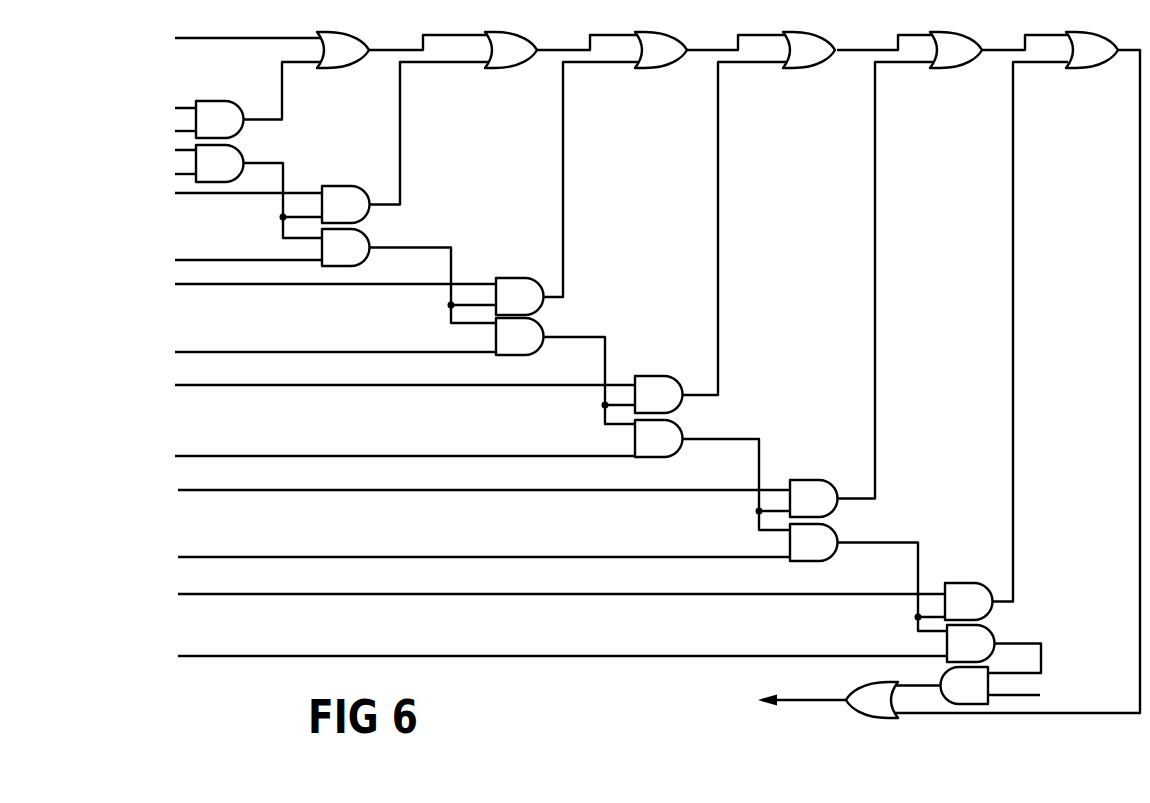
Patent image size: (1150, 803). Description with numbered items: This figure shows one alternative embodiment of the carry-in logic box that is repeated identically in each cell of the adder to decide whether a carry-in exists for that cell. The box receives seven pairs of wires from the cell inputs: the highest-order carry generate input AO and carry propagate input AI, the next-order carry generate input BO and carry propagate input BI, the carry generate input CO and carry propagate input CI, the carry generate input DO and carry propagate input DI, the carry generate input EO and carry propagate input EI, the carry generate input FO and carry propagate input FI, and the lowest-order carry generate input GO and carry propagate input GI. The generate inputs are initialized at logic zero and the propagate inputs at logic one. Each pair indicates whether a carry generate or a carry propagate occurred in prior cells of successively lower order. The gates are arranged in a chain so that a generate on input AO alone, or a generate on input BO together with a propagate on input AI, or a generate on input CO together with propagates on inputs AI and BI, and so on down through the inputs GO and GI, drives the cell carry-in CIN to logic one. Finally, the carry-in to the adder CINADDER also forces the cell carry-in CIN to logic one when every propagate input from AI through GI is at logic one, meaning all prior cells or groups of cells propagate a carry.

The carry generate input A0 AO is at (224, 36).
The carry propagate input A1 AI is at (162, 129).
The carry generate input B0 BO is at (162, 129).
The carry propagate input B1 BI is at (162, 171).
The carry generate input C0 CO is at (225, 198).
The carry propagate input C1 CI is at (226, 258).
The carry generate input D0 DO is at (313, 283).
The carry propagate input D1 DI is at (313, 351).
The carry generate input E0 EO is at (383, 381).
The carry propagate input E1 EI is at (383, 453).
The carry generate input F0 FO is at (460, 486).
The carry propagate input F1 FI is at (461, 555).
The carry generate input G0 GO is at (540, 595).
The carry propagate input G1 GI is at (542, 656).
The carry-in to the adder CINADDER is at (1063, 695).
The cell carry-in CIN is at (755, 697).